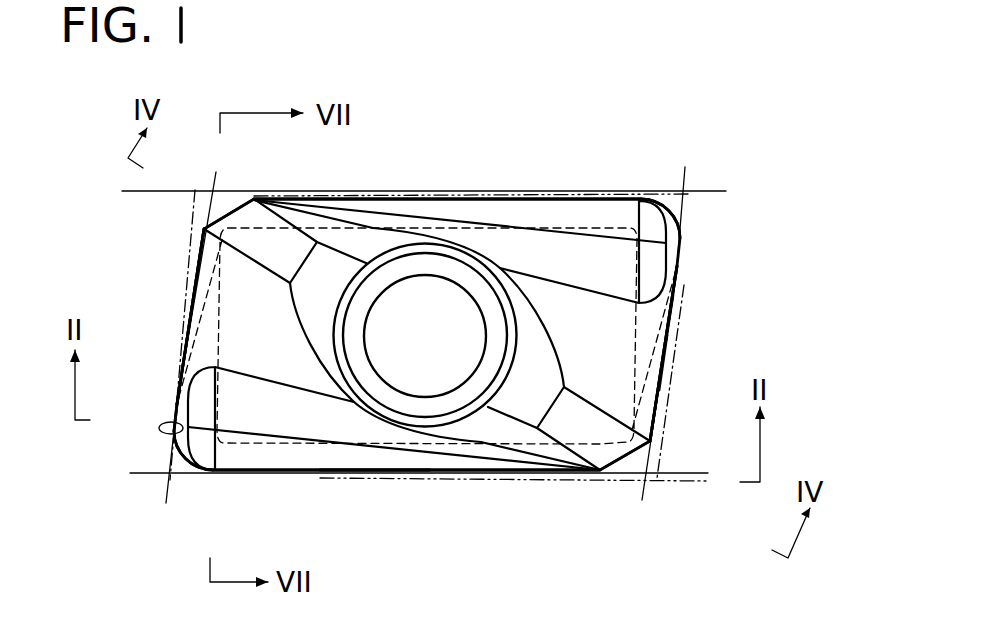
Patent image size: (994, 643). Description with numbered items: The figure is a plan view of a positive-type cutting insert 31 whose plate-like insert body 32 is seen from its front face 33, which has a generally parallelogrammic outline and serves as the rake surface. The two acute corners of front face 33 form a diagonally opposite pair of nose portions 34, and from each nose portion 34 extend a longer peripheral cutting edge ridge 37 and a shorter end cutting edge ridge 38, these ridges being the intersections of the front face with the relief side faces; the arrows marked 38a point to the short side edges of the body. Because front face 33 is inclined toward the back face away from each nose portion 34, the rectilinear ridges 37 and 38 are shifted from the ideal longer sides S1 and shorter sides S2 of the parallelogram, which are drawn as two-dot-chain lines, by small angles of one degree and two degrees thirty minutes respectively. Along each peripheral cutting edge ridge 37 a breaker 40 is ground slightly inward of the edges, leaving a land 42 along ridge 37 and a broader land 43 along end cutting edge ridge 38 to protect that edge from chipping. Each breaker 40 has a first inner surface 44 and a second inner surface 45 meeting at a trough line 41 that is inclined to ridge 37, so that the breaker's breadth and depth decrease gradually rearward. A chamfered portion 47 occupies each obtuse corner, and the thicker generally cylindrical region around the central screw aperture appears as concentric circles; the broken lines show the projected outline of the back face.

The cutting insert 31 is at (612, 97).
The insert body 32 is at (706, 350).
The front face 33 is at (683, 324).
The nose portion 34 is at (675, 196).
The peripheral cutting edge ridge 37 is at (378, 197).
The end cutting edge ridge 38 is at (183, 428).
The inclined side edge 38a is at (194, 259).
The breaker 40 is at (551, 221).
The trough line 41 is at (520, 226).
The land 42 is at (377, 474).
The land 43 is at (177, 404).
The first inner surface 44 is at (444, 212).
The second inner surface 45 is at (236, 378).
The chamfered portion 47 is at (247, 210).
The longer side S1 is at (201, 186).
The shorter side S2 is at (684, 207).